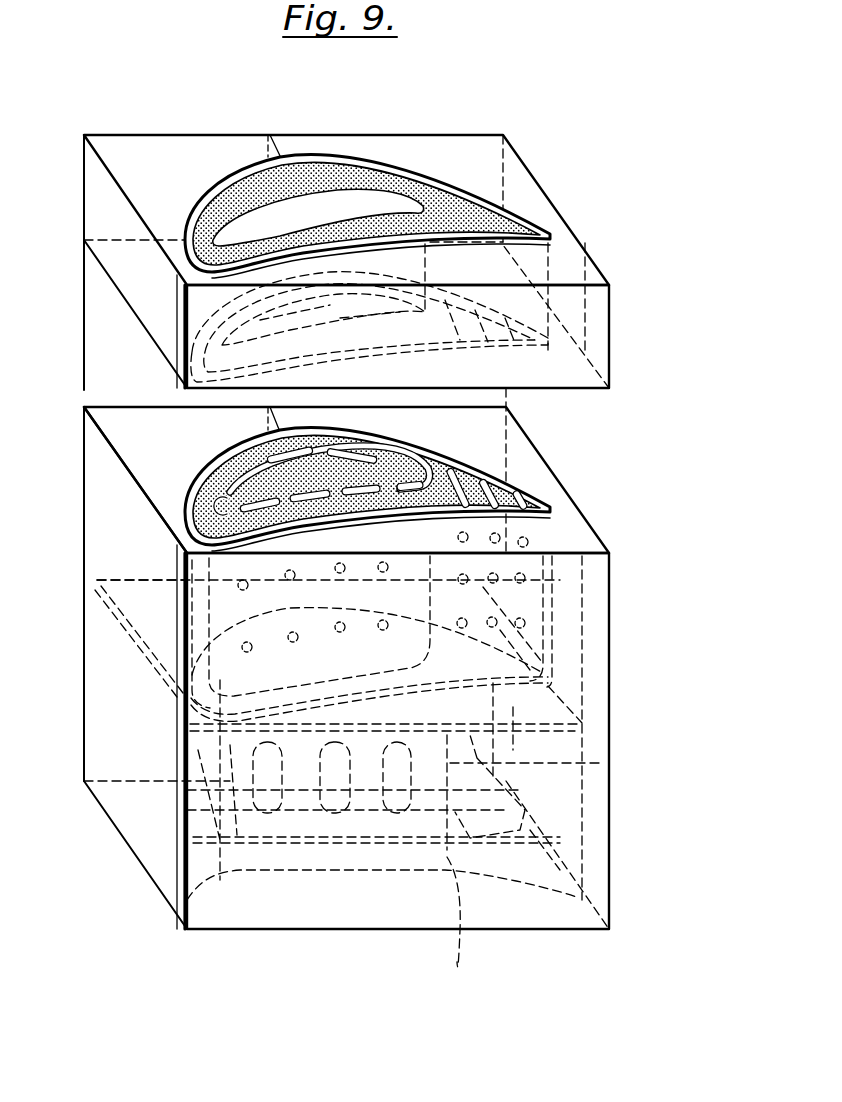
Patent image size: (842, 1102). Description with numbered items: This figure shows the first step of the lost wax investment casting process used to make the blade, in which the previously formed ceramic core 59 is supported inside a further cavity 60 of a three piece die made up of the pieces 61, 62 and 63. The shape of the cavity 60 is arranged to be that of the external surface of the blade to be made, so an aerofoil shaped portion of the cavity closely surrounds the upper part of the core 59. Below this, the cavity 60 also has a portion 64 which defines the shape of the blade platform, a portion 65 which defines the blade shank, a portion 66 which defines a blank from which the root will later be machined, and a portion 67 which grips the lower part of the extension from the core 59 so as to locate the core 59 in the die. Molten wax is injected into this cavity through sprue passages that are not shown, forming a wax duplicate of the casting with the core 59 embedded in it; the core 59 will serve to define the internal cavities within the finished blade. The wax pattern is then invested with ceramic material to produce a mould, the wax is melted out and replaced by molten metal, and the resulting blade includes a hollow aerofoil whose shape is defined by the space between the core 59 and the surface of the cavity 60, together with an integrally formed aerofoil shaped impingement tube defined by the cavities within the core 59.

The ceramic core 59 is at (435, 472).
The cavity 60 is at (508, 515).
The die piece 61 is at (355, 917).
The die piece 62 is at (90, 641).
The die piece 63 is at (537, 470).
The platform portion 64 is at (560, 701).
The shank portion 65 is at (600, 763).
The root blank portion 66 is at (547, 835).
The core gripping portion 67 is at (444, 928).